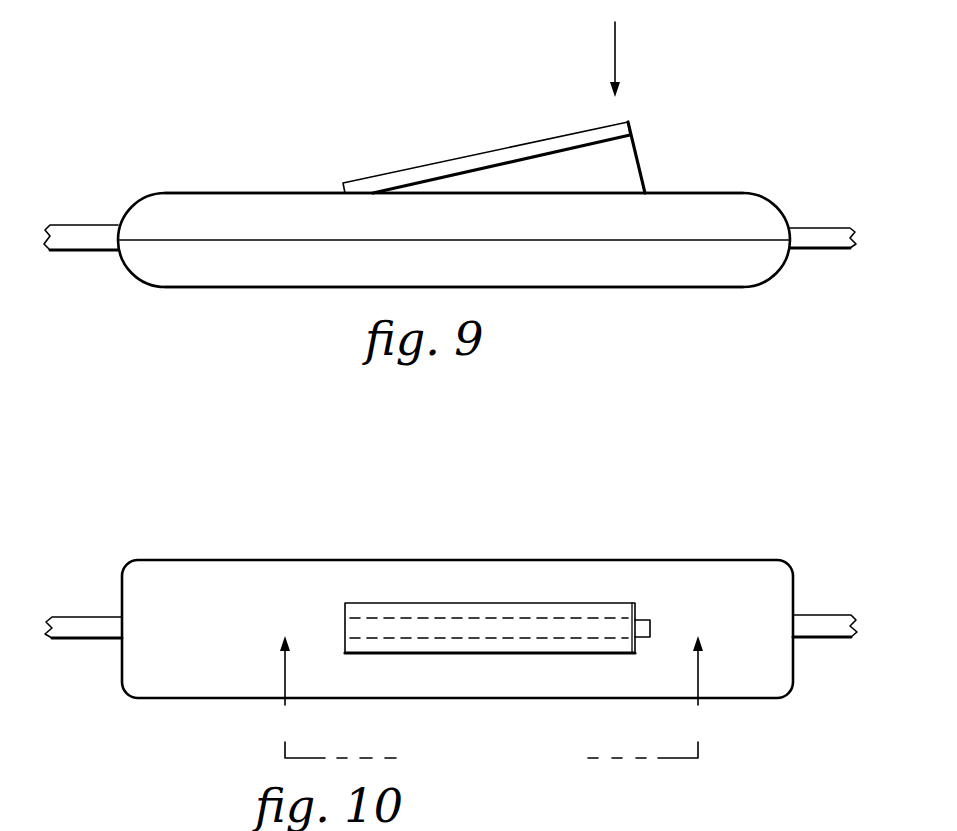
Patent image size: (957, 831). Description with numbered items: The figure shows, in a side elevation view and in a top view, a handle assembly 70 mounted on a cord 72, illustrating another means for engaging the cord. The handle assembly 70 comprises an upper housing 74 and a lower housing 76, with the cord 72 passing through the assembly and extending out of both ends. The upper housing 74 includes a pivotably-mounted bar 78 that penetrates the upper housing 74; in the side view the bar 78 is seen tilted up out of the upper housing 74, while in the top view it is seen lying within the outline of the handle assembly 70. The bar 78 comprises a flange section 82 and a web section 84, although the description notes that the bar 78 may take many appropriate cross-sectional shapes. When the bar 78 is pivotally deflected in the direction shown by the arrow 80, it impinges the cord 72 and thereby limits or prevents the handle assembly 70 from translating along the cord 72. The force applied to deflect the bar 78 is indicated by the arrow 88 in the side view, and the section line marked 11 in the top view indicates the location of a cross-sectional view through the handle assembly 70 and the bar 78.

In FIG. 9, the handle assembly 70 is at (736, 130).
In FIG. 9, the cord 72 is at (812, 225).
In FIG. 10, the cord 72 is at (812, 615).
In FIG. 9, the upper housing 74 is at (172, 193).
In FIG. 10, the upper housing 74 is at (350, 580).
In FIG. 9, the lower housing 76 is at (136, 282).
In FIG. 9, the pivotably-mounted bar 78 is at (455, 158).
In FIG. 10, the pivotably-mounted bar 78 is at (512, 602).
In FIG. 9, the flange section 82 is at (545, 147).
In FIG. 10, the flange section 82 is at (490, 650).
In FIG. 9, the web section 84 is at (639, 157).
In FIG. 10, the web section 84 is at (642, 622).
In FIG. 9, the applied force arrow 88 is at (617, 66).
In FIG. 10, the section line 11- 11 is at (490, 697).
In FIG. 10, the arrow 80 is at (691, 825).